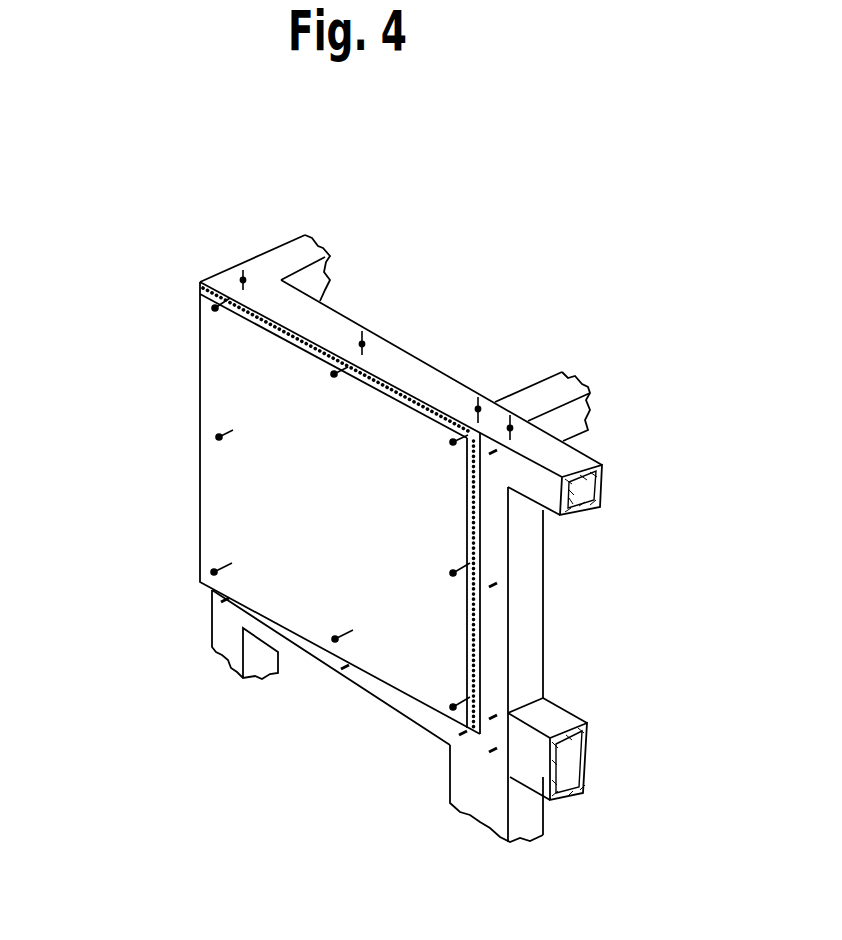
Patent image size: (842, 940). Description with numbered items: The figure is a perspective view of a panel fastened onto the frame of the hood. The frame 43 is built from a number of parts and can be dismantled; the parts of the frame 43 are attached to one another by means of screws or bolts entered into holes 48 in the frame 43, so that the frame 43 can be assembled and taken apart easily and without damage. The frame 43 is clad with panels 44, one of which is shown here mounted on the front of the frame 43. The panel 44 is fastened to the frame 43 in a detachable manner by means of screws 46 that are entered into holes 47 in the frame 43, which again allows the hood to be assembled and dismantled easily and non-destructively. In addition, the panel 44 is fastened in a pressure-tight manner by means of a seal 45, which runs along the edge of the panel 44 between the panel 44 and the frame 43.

The frame 43 is at (458, 395).
The panel 44 is at (253, 393).
The seal 45 is at (395, 380).
The screw 46 is at (213, 308).
The hole 47 is at (493, 585).
The hole 48 is at (245, 268).